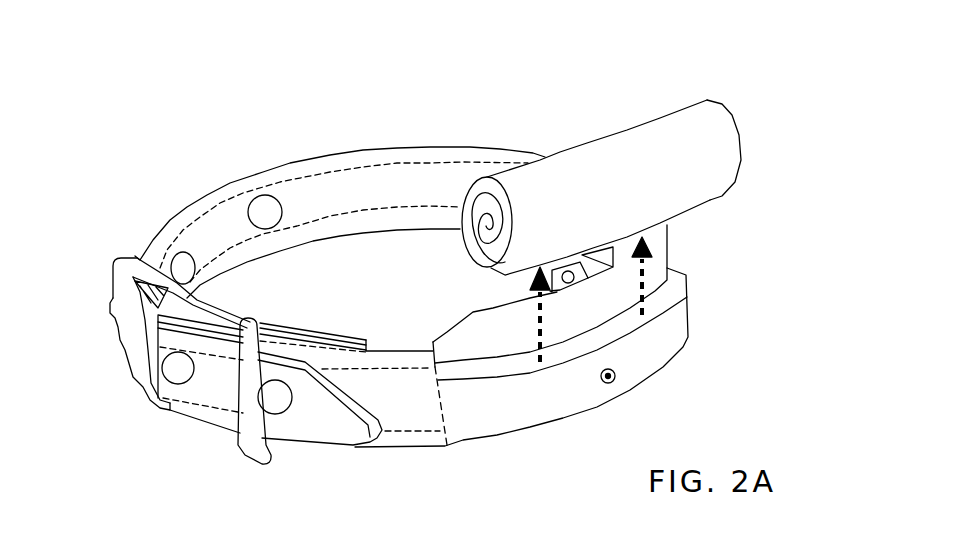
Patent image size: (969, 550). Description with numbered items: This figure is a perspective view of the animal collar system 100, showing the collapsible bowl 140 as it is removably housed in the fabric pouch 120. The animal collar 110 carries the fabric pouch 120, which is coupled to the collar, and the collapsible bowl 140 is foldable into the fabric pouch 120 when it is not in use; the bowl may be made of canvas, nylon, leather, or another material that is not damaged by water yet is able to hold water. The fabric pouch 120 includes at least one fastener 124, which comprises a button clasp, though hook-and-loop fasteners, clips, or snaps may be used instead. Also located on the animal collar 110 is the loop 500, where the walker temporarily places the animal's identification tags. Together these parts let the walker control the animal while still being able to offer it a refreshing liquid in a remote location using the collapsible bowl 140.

The animal collar system 100 is at (430, 73).
The animal collar 110 is at (287, 160).
The fabric pouch 120 is at (558, 432).
The fastener 124 is at (623, 386).
The collapsible bowl 140 is at (586, 141).
The loop 500 is at (103, 311).